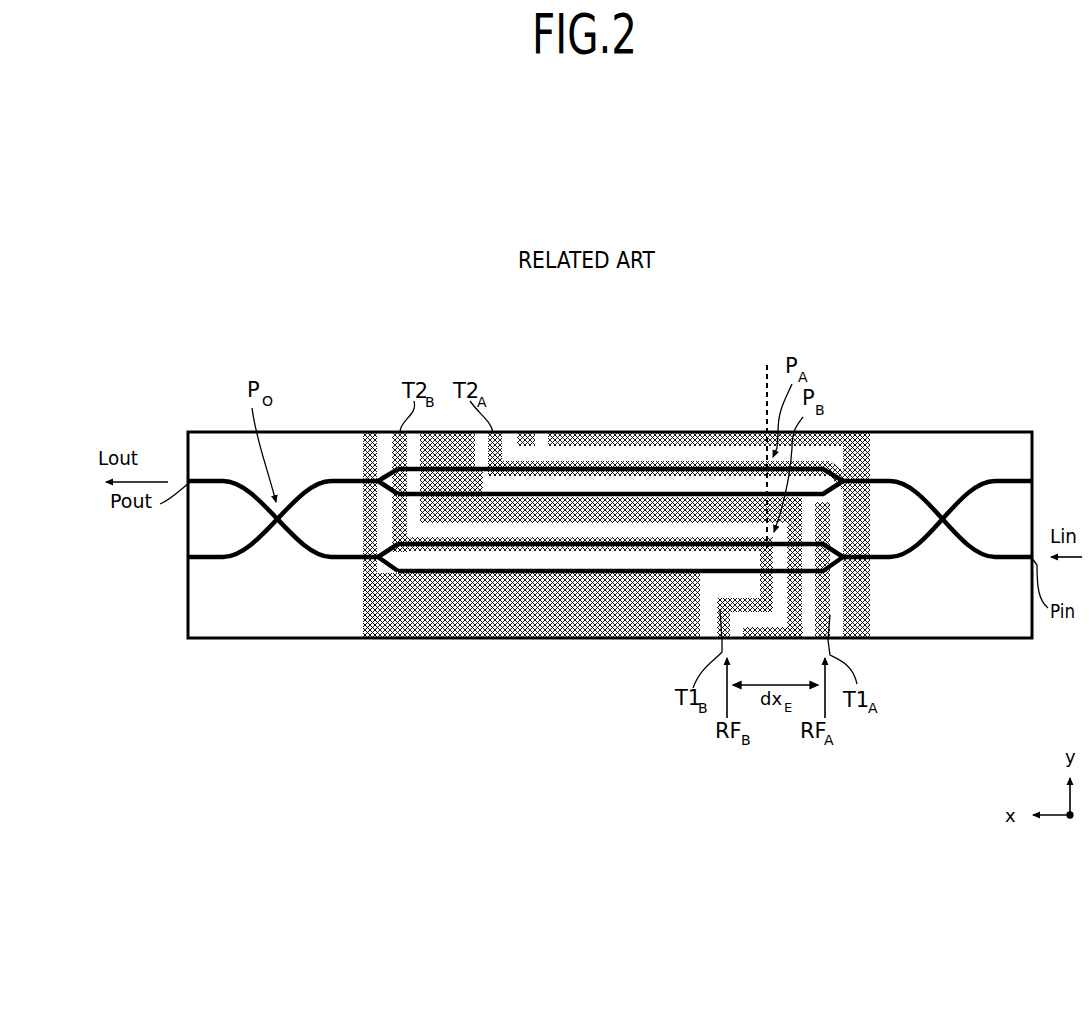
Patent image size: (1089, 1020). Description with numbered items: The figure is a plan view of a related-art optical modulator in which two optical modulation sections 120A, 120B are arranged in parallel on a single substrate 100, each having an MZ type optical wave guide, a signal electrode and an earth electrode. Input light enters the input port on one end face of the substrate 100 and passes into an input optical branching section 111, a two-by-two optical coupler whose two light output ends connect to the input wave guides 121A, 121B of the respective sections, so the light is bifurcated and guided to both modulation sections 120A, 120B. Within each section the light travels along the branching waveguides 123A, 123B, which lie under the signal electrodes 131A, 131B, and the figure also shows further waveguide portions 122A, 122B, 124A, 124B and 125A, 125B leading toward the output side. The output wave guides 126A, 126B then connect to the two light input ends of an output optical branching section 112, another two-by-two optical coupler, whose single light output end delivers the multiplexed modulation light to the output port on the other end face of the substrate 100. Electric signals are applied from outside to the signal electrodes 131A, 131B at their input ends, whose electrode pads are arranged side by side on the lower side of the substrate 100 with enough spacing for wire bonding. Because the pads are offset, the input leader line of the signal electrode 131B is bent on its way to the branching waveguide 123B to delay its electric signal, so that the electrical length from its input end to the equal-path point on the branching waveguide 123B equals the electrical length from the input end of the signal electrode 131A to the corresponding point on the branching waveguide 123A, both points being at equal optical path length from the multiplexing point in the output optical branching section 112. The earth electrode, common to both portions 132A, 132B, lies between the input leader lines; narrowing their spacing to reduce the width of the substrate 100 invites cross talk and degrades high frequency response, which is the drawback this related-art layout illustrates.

The substrate 100 is at (1010, 640).
The input optical branching section 111 is at (944, 515).
The output optical branching section 112 is at (277, 528).
The optical modulation section 120A is at (866, 374).
The optical modulation section 120B is at (430, 703).
The input wave guide 121A is at (878, 478).
The input wave guide 121B is at (878, 535).
The signal electrode A 122A is at (840, 458).
The signal electrode B 122B is at (845, 560).
The branching waveguide 123A is at (573, 463).
The branching waveguide 123B is at (492, 552).
The ground electrode A 124A is at (527, 491).
The ground electrode B 124B is at (457, 578).
The ground electrode A 125A is at (376, 535).
The ground electrode B 125B is at (376, 535).
The output wave guide 126A is at (343, 535).
The output wave guide 126B is at (343, 535).
The signal electrode 131A is at (622, 463).
The signal electrode 131B is at (548, 552).
The earth electrode 132A is at (708, 515).
The earth electrode 132B is at (640, 620).